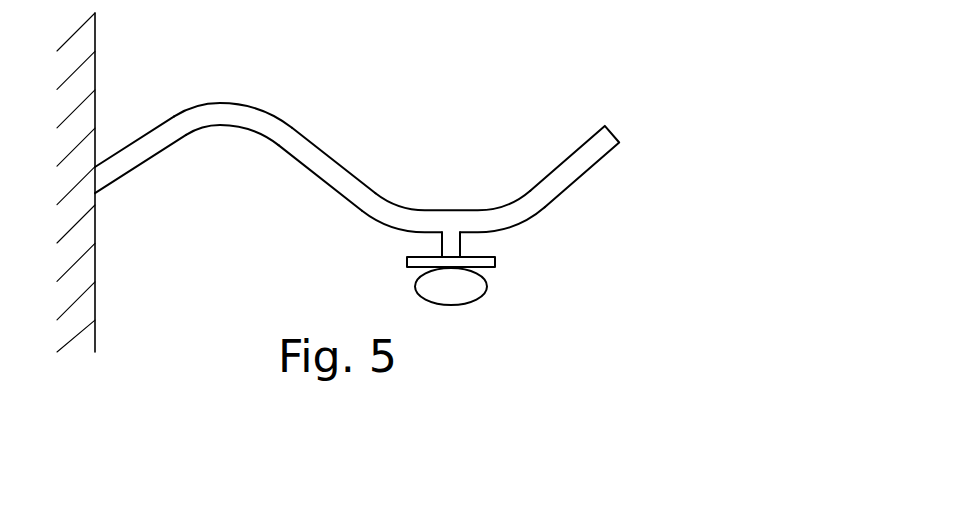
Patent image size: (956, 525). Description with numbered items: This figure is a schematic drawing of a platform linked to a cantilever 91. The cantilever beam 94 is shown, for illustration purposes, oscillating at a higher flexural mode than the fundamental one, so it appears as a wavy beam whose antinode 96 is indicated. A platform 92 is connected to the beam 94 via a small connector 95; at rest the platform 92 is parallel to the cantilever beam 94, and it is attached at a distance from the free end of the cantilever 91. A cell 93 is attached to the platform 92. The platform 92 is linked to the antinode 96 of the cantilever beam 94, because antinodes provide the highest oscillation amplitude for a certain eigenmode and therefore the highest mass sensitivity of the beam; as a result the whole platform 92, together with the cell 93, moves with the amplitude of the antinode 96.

The cantilever 91 is at (357, 122).
The platform 92 is at (508, 257).
The cell 93 is at (465, 310).
The cantilever beam 94 is at (208, 112).
The small connector 95 is at (446, 247).
The antinode 96 is at (447, 210).